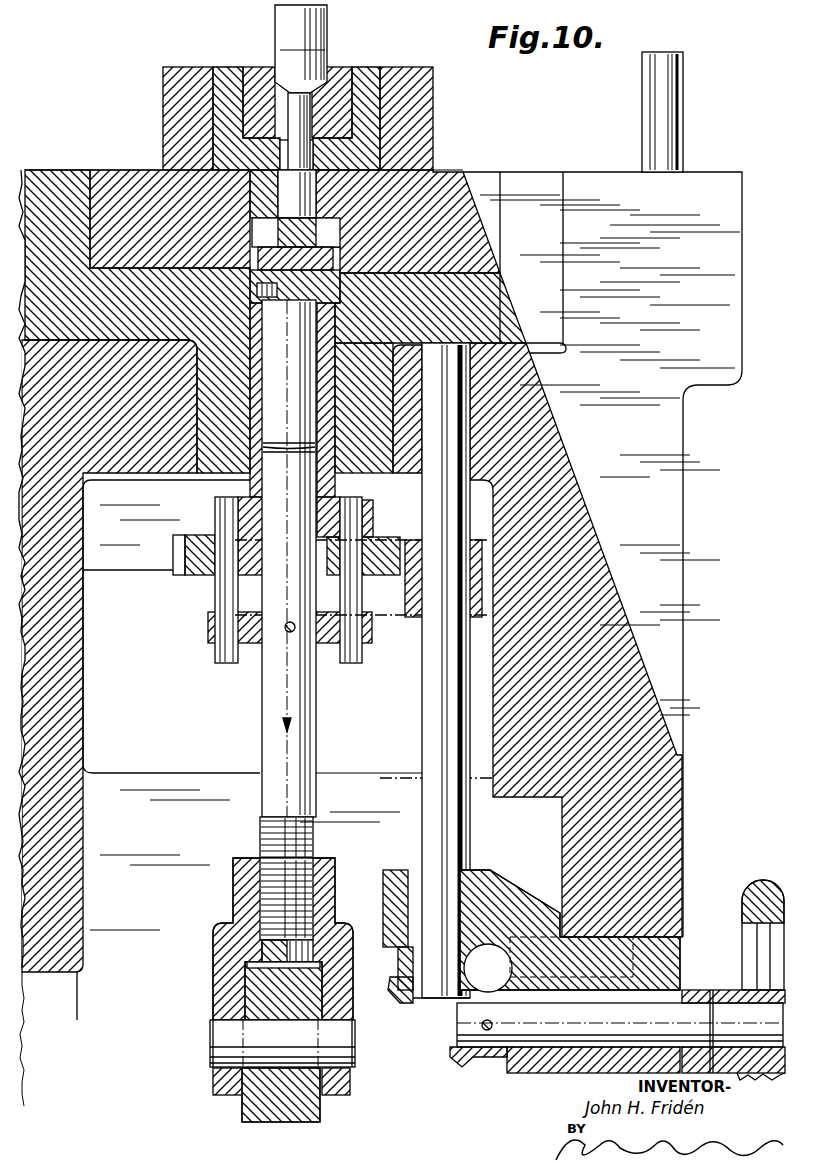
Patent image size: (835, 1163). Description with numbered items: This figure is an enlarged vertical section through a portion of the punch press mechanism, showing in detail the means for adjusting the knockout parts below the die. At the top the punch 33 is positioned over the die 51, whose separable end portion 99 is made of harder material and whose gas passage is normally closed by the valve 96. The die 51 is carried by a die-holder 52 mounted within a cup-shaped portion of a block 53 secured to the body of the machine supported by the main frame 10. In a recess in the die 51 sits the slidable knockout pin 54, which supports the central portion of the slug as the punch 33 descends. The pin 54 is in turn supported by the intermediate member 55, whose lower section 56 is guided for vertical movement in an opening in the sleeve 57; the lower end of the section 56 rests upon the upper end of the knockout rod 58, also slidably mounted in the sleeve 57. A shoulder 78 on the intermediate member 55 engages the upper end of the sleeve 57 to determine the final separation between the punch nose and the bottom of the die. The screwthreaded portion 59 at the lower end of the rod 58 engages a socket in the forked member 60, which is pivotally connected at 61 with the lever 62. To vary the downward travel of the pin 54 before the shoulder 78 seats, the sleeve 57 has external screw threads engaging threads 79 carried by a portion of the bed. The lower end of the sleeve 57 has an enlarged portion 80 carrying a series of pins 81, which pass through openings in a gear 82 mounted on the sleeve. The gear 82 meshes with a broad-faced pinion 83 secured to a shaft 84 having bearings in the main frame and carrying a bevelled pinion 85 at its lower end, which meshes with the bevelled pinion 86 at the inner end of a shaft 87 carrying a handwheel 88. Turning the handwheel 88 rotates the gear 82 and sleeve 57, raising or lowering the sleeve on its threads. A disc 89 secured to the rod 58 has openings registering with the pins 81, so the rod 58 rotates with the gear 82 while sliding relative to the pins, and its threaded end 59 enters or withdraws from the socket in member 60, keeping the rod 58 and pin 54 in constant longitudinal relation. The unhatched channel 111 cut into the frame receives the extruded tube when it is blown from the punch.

The main frame 10 is at (660, 140).
The punch 33 is at (283, 24).
The die 51 is at (340, 68).
The die-holder 52 is at (372, 75).
The block 53 is at (433, 113).
The knockout pin 54 is at (312, 115).
The intermediate member 55 is at (318, 187).
The lower section 56 is at (300, 350).
The sleeve 57 is at (345, 487).
The knockout rod 58 is at (305, 707).
The screwthreaded portion 59 is at (272, 843).
The forked member 60 is at (245, 907).
The pivotal connection 61 is at (213, 1043).
The lever 62 is at (245, 1107).
The shoulder 78 is at (300, 258).
The threads 79 is at (252, 410).
The enlarged portion 80 is at (205, 520).
The pins 81 is at (222, 600).
The gear 82 is at (185, 575).
The pinion 83 is at (476, 617).
The shaft 84 is at (425, 735).
The bevelled pinion 85 is at (405, 990).
The bevelled pinion 86 is at (463, 1058).
The shaft 87 is at (663, 1023).
The handwheel 88 is at (762, 880).
The disc 89 is at (372, 638).
The valve 96 is at (312, 96).
The end portion 99 is at (283, 60).
The channel 111 is at (660, 445).